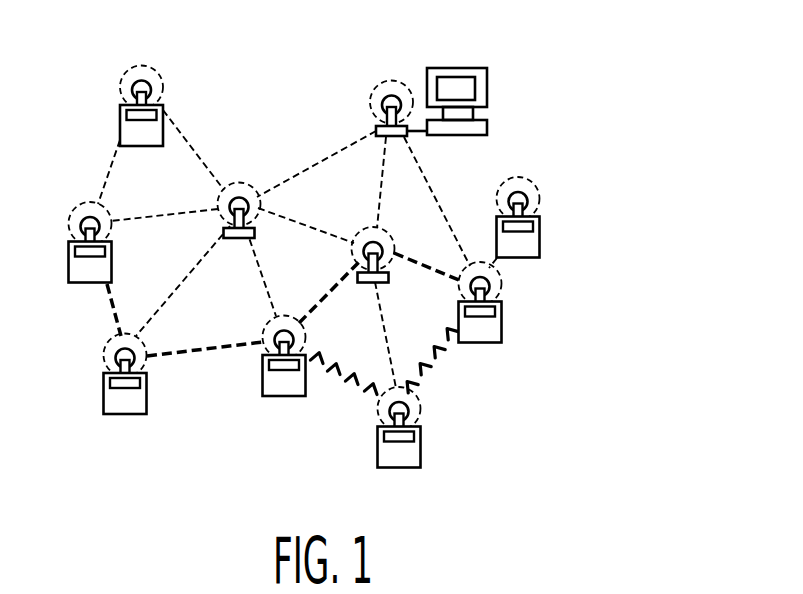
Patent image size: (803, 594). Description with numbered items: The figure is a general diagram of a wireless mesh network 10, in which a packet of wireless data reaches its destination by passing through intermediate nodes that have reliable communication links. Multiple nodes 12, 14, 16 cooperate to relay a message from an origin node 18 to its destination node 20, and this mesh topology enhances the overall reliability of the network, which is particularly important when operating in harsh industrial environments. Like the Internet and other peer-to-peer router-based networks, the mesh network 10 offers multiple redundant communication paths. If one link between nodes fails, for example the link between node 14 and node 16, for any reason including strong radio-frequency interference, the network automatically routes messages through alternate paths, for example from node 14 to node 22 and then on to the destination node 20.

The wireless mesh network 10 is at (575, 158).
The node 12 is at (125, 415).
The node 14 is at (290, 397).
The node 16 is at (368, 240).
The origin node 18 is at (86, 284).
The destination node 20 is at (482, 343).
The node 22 is at (412, 460).